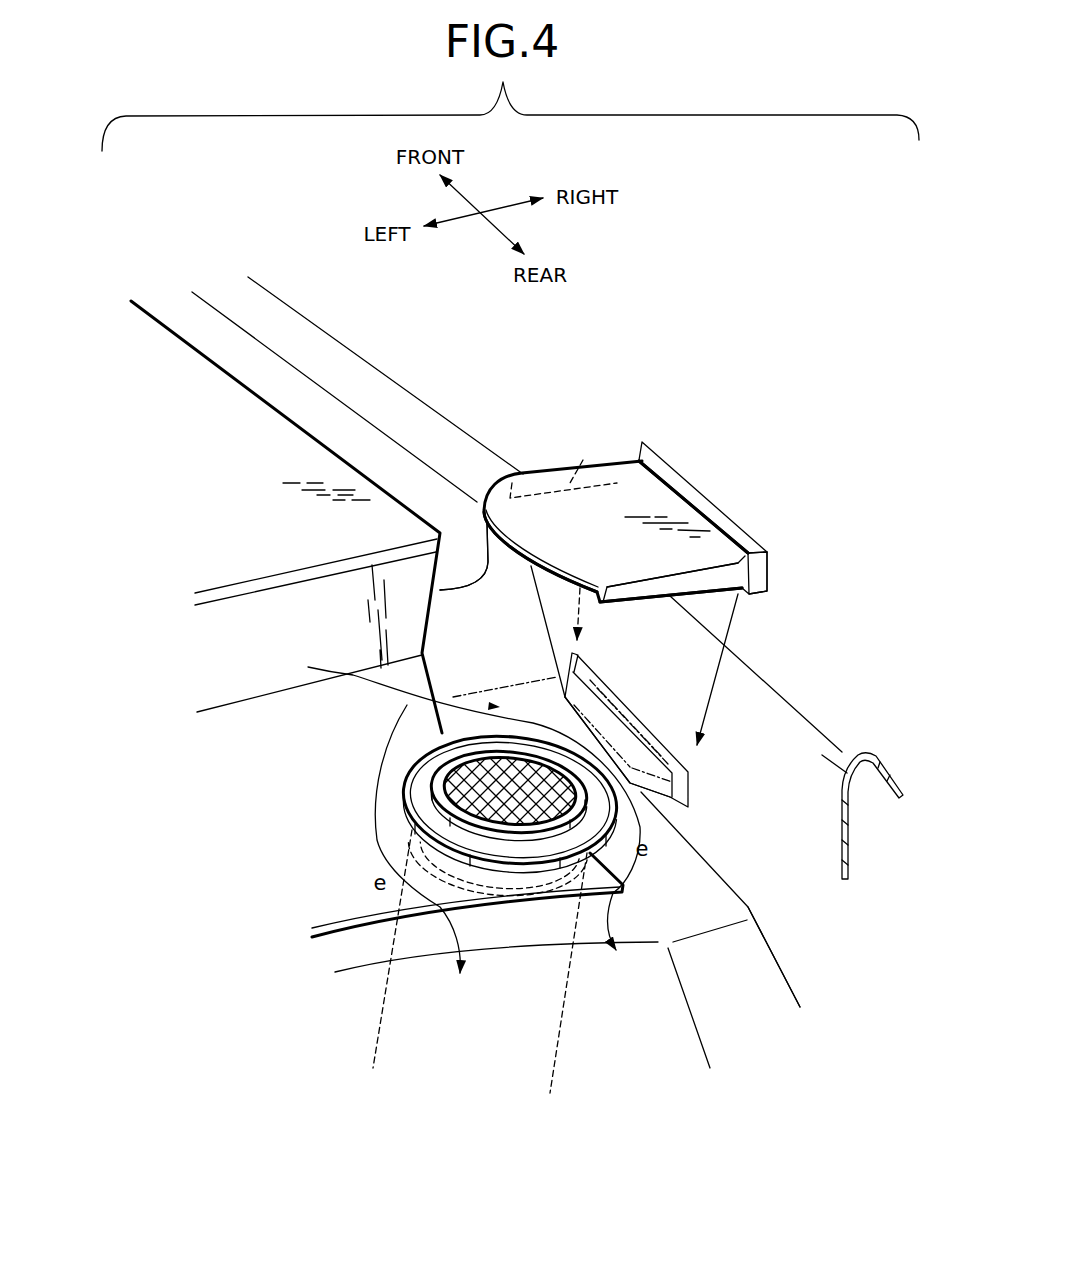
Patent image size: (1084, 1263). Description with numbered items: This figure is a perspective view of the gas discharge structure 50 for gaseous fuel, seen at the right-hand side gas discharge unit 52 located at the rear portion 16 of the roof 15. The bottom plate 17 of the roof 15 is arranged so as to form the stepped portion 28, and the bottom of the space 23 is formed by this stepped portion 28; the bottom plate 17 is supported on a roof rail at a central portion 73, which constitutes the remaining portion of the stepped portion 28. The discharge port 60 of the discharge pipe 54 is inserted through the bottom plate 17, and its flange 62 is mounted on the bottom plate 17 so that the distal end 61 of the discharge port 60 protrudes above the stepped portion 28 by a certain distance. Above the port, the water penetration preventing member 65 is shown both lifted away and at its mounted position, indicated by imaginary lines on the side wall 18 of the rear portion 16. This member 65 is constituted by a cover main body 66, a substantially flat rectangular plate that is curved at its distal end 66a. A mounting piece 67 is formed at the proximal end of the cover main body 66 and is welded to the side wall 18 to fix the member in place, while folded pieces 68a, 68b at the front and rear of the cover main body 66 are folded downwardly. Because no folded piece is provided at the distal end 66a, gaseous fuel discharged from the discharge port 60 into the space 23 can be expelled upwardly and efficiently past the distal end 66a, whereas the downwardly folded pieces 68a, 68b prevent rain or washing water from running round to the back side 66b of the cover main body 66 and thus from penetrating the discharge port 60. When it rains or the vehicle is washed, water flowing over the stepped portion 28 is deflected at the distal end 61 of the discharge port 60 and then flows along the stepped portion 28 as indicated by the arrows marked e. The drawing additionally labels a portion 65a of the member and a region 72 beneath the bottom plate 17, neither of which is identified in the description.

The roof 15 is at (237, 418).
The rear portion 16 is at (352, 560).
The bottom plate 17 is at (353, 880).
The side wall 18 is at (776, 800).
The space 23 is at (312, 668).
The stepped portion 28 is at (332, 879).
The gas discharge structure 50 is at (620, 332).
The right-hand side gas discharge unit 52 is at (725, 365).
The discharge pipe 54 is at (561, 1048).
The discharge port 60 is at (403, 822).
The distal end 61 is at (437, 767).
The flange 62 is at (413, 782).
The water penetration preventing member 65 is at (720, 455).
The wall surface 65a is at (658, 500).
The cover main body 66 is at (613, 507).
The distal end 66a is at (506, 503).
The back side 66b is at (523, 565).
The mounting piece 67 is at (710, 492).
The folded piece 68a is at (583, 460).
The folded piece 68b is at (705, 589).
The floor panel 72 is at (352, 984).
The central portion 73 is at (352, 948).